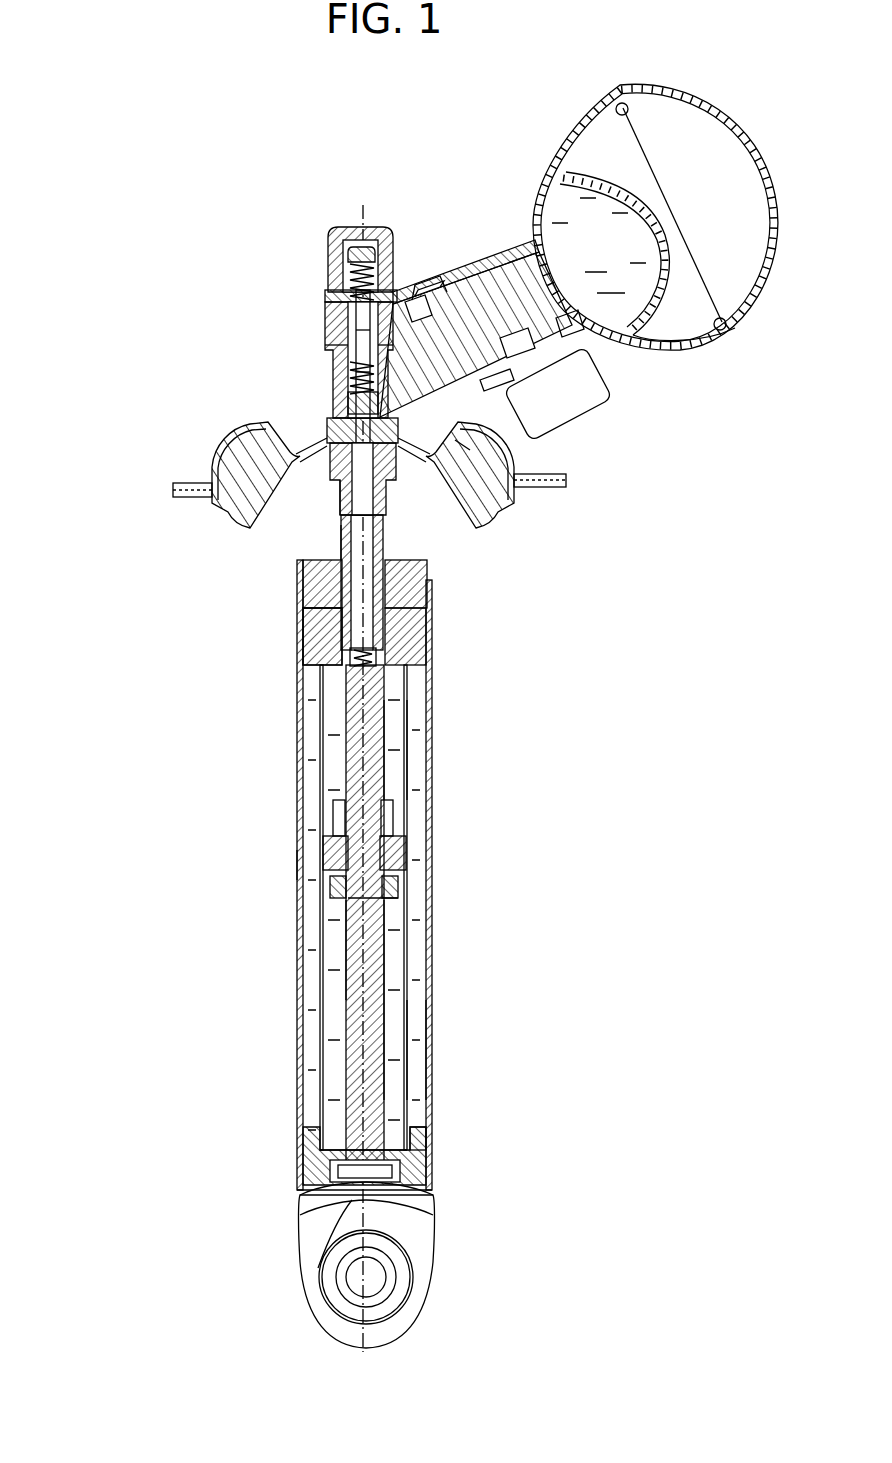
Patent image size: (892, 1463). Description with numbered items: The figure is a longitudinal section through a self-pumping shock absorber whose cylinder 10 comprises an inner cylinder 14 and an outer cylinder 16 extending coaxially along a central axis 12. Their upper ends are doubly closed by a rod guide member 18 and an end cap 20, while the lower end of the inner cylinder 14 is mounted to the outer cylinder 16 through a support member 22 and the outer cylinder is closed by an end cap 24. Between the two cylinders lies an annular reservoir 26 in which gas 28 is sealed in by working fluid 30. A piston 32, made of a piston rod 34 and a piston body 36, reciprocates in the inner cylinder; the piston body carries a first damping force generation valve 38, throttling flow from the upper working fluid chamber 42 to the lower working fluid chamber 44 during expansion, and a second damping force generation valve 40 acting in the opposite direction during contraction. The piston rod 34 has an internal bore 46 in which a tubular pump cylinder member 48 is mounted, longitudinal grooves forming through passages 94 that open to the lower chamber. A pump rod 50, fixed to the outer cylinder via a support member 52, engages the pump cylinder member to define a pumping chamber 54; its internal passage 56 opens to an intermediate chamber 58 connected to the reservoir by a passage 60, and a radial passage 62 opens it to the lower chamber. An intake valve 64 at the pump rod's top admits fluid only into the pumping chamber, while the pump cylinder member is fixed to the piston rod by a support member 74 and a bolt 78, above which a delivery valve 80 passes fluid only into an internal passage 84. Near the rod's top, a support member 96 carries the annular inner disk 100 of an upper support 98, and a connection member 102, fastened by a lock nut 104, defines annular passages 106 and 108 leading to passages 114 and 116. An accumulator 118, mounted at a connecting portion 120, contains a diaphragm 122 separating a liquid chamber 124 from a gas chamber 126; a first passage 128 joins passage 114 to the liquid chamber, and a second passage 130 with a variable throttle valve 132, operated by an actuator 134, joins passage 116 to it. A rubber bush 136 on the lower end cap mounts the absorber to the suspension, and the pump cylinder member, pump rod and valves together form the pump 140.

The cylinder 10 is at (278, 866).
The central axis 12 is at (410, 1212).
The inner cylinder 14 is at (320, 990).
The outer cylinder 16 is at (298, 1038).
The rod guide member 18 is at (305, 642).
The end cap 20 is at (303, 568).
The support member 22 is at (312, 1152).
The end cap 24 is at (330, 1216).
The annular reservoir 26 is at (422, 1038).
The gas 28 is at (415, 752).
The working fluid 30 is at (412, 1064).
The piston 32 is at (340, 765).
The piston rod 34 is at (384, 540).
The piston body 36 is at (408, 856).
The first damping force generation valve 38 is at (402, 878).
The second damping force generation valve 40 is at (332, 835).
The upper working fluid chamber 42 is at (394, 776).
The lower working fluid chamber 44 is at (386, 948).
The internal bore 46 is at (345, 540).
The pump cylinder member 48 is at (412, 600).
The pump rod 50 is at (352, 948).
The support member 52 is at (318, 1268).
The pumping chamber 54 is at (370, 572).
The internal passage 56 is at (378, 986).
The intermediate chamber 58 is at (388, 1202).
The passage 60 is at (418, 1148).
The radial passage 62 is at (372, 896).
The intake valve 64 is at (376, 664).
The support member 74 is at (350, 270).
The bolt 78 is at (374, 242).
The delivery valve 80 is at (356, 350).
The internal passage 84 is at (325, 296).
The through passages 94 is at (386, 492).
The support member 96 is at (340, 490).
The upper support 98 is at (237, 428).
The annular inner disk 100 is at (480, 522).
The connection member 102 is at (333, 388).
The lock nut 104 is at (340, 238).
The annular passage 106 is at (326, 320).
The annular passage 108 is at (333, 411).
The passage 114 is at (506, 376).
The passage 116 is at (470, 459).
The accumulator 118 is at (584, 100).
The connecting portion 120 is at (440, 283).
The diaphragm 122 is at (660, 316).
The liquid chamber 124 is at (562, 200).
The gas chamber 126 is at (687, 205).
The first passage 128 is at (470, 270).
The second passage 130 is at (512, 352).
The variable throttle valve 132 is at (584, 318).
The actuator 134 is at (572, 425).
The rubber bush 136 is at (392, 1258).
The pump 140 is at (310, 618).